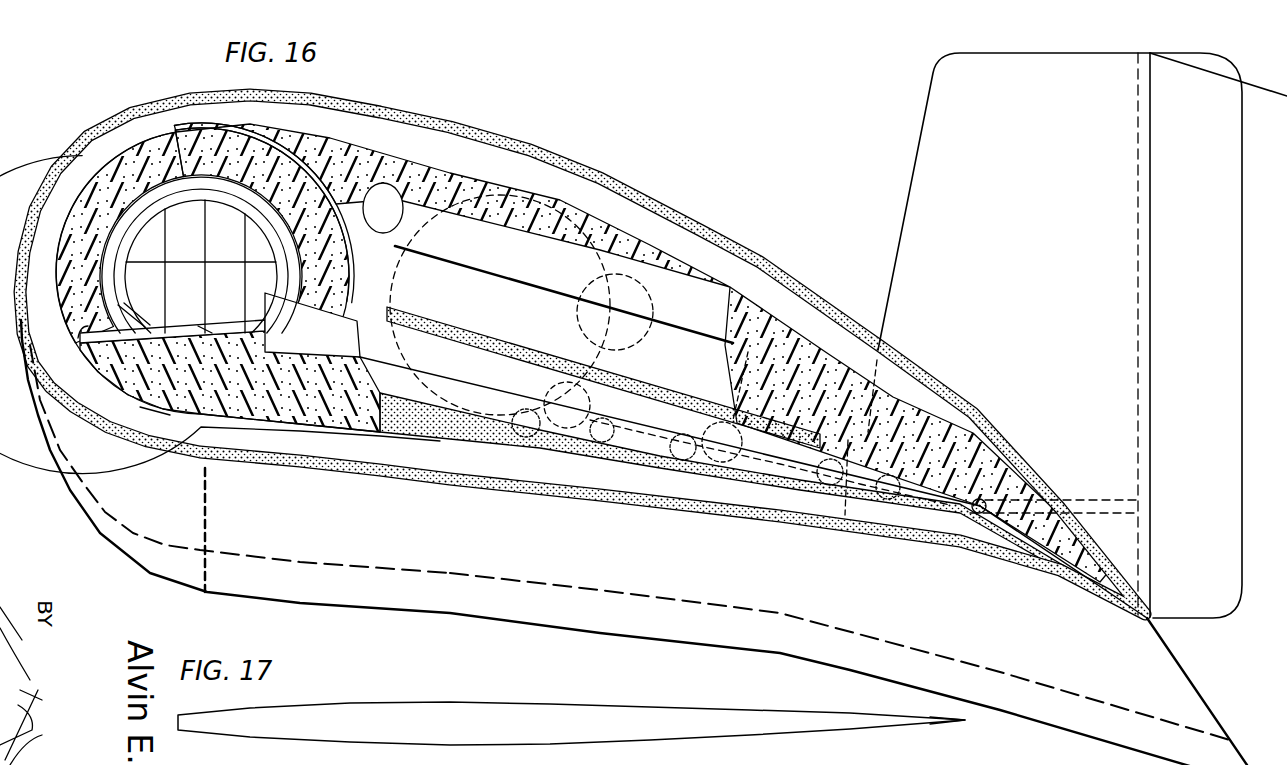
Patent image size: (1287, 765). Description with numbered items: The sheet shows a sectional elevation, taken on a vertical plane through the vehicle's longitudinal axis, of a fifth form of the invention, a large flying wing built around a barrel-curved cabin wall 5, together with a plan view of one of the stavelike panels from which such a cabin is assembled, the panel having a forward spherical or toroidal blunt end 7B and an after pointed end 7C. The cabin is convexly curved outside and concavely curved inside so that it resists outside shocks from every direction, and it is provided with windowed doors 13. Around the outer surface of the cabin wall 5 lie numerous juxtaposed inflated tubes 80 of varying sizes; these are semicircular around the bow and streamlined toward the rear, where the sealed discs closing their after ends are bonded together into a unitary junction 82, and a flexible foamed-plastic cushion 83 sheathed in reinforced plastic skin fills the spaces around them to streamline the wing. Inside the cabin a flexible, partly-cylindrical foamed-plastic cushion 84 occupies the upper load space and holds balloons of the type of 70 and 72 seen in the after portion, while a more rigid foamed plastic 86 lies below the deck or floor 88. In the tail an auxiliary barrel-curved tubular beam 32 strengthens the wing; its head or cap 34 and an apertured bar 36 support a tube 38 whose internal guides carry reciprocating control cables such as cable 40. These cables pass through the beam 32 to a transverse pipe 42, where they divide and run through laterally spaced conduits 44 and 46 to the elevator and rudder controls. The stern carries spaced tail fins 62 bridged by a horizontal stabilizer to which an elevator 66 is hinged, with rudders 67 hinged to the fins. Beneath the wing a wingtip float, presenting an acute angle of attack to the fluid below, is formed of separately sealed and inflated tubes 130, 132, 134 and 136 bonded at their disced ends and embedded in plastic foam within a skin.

In FIG. 16, the barrel-curved cabin wall 5 is at (172, 148).
In FIG. 16, the windowed doors 13 is at (235, 249).
In FIG. 16, the tubular beam 32 is at (479, 342).
In FIG. 16, the head or cap 34 is at (270, 312).
In FIG. 16, the apertured bar 36 is at (530, 413).
In FIG. 16, the tube 38 is at (78, 338).
In FIG. 16, the control cable 40 is at (150, 316).
In FIG. 16, the transverse pipe 42 is at (984, 502).
In FIG. 16, the conduit 44 is at (1118, 504).
In FIG. 16, the conduit 46 is at (1143, 273).
In FIG. 16, the tail fin 62 is at (1052, 347).
In FIG. 16, the elevator 66 is at (1185, 60).
In FIG. 16, the rudder 67 is at (1206, 329).
In FIG. 16, the balloon 70 is at (652, 275).
In FIG. 16, the balloon 72 is at (500, 254).
In FIG. 16, the inflated tubes 80 is at (358, 134).
In FIG. 16, the unitary junction 82 is at (1052, 556).
In FIG. 16, the foamed-plastic cushion 83 is at (880, 532).
In FIG. 16, the partly-cylindrical cushion 84 is at (191, 150).
In FIG. 16, the rigid foamed plastic 86 is at (140, 406).
In FIG. 16, the deck or floor 88 is at (200, 325).
In FIG. 16, the inflated tube 130 is at (485, 534).
In FIG. 16, the inflated tube 132 is at (180, 499).
In FIG. 16, the inflated tube 134 is at (185, 564).
In FIG. 16, the inflated tube 136 is at (735, 629).
In FIG. 17, the blunt end 7B is at (185, 722).
In FIG. 17, the pointed end 7C is at (929, 724).